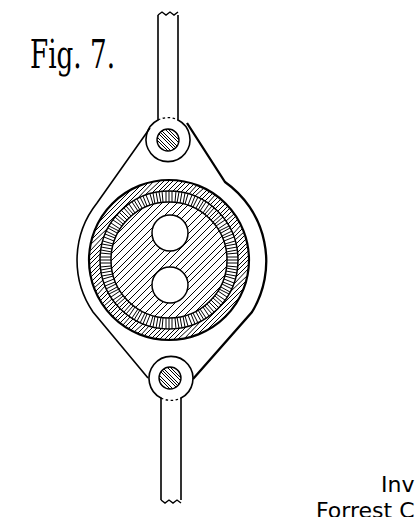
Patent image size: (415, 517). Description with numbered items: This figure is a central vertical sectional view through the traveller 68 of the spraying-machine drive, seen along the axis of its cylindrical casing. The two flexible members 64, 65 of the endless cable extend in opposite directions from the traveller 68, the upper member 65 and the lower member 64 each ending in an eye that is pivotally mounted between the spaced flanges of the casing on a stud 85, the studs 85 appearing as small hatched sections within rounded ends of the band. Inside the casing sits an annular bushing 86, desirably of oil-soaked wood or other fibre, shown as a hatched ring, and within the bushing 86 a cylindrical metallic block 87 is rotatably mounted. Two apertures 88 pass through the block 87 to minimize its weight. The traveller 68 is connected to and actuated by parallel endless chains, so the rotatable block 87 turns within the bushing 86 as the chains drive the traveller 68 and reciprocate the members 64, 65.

The flexible member 64 is at (177, 458).
The flexible member 65 is at (178, 56).
The traveller 68 is at (248, 313).
The studs 85 is at (139, 144).
The annular bushing 86 is at (203, 200).
The cylindrical metallic block 87 is at (213, 238).
The apertures 88 is at (160, 283).